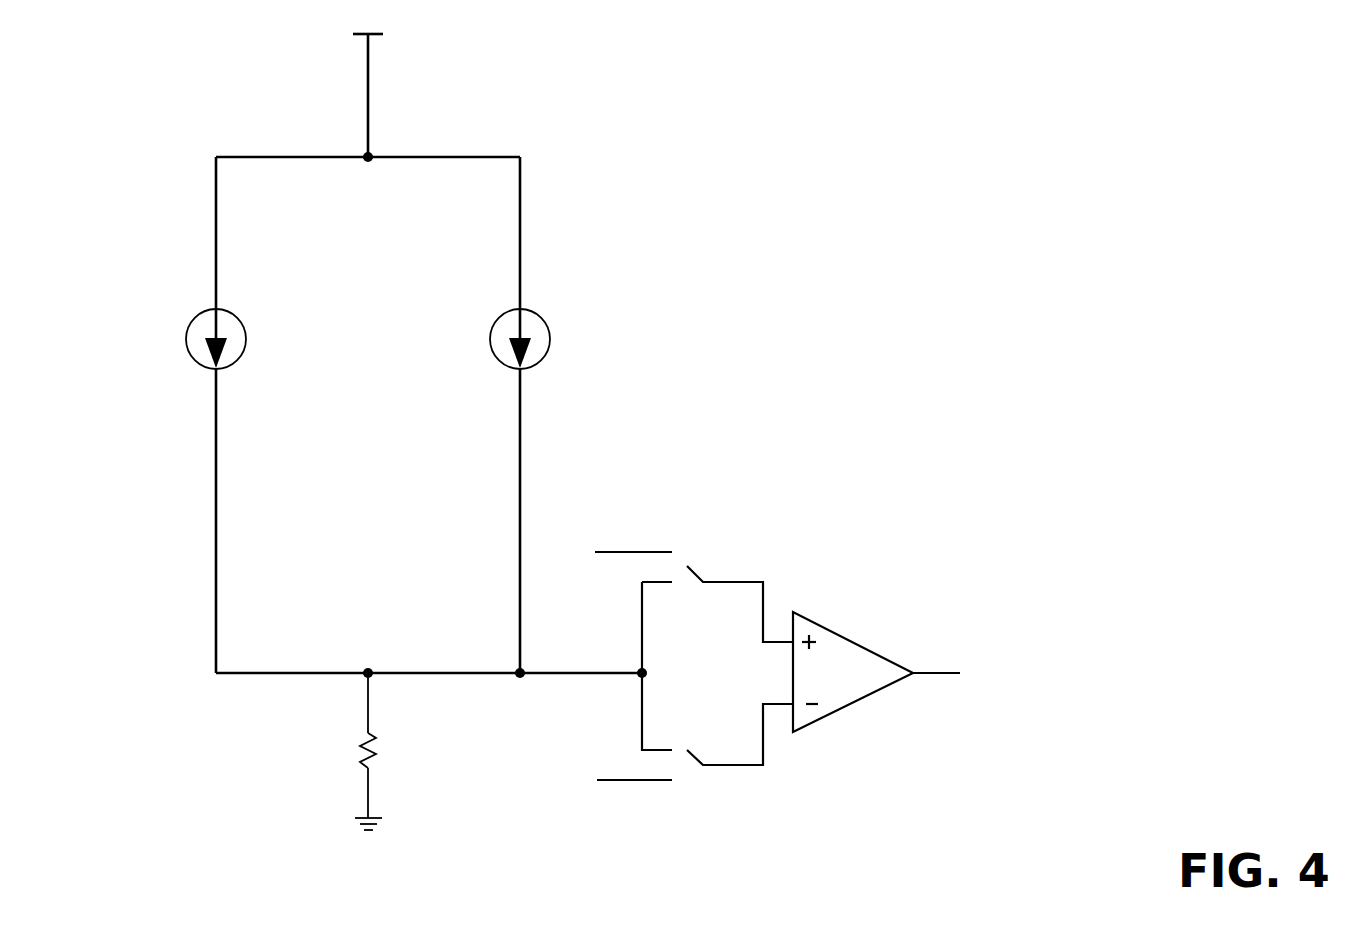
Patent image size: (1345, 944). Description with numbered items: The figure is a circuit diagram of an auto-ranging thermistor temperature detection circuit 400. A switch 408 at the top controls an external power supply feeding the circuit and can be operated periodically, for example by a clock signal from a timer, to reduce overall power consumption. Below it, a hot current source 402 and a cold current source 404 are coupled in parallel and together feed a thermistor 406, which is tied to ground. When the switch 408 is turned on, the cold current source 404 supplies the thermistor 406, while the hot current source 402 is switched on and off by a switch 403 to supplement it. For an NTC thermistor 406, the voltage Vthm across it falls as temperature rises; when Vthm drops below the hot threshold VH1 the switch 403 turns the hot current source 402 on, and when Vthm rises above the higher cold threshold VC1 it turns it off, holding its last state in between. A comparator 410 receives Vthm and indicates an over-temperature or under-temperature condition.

The auto-ranging thermistor temperature detection circuit 400 is at (573, 432).
The hot current source 402 is at (221, 310).
The switch 403 is at (217, 618).
The cold current source 404 is at (525, 310).
The thermistor 406 is at (370, 733).
The switch 408 is at (368, 128).
The comparator 410 is at (822, 625).